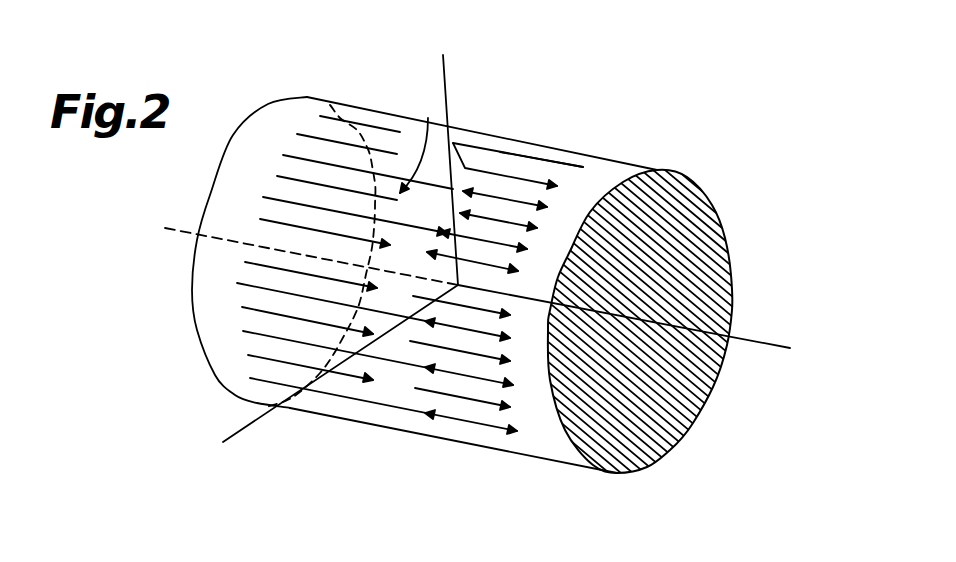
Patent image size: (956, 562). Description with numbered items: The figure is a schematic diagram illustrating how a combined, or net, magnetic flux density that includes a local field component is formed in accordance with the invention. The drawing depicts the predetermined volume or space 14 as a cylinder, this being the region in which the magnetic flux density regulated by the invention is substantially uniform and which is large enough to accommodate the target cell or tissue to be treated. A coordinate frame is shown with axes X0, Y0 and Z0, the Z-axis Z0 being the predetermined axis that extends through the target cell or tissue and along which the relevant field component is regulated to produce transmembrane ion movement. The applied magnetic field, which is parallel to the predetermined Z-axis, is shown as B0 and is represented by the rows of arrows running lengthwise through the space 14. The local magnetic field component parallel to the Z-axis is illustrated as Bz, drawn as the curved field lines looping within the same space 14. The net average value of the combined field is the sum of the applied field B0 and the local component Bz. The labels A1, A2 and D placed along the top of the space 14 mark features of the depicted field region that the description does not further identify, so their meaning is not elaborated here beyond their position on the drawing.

The predetermined volume or space 14 is at (575, 132).
The first field region A1 is at (518, 127).
The second field region A2 is at (567, 130).
The distance between field regions D is at (540, 158).
The applied magnetic field B0 is at (326, 223).
The local magnetic field component Bz is at (424, 134).
The x axis X0 is at (438, 158).
The y axis Y0 is at (329, 363).
The Z-axis Z0 is at (482, 291).